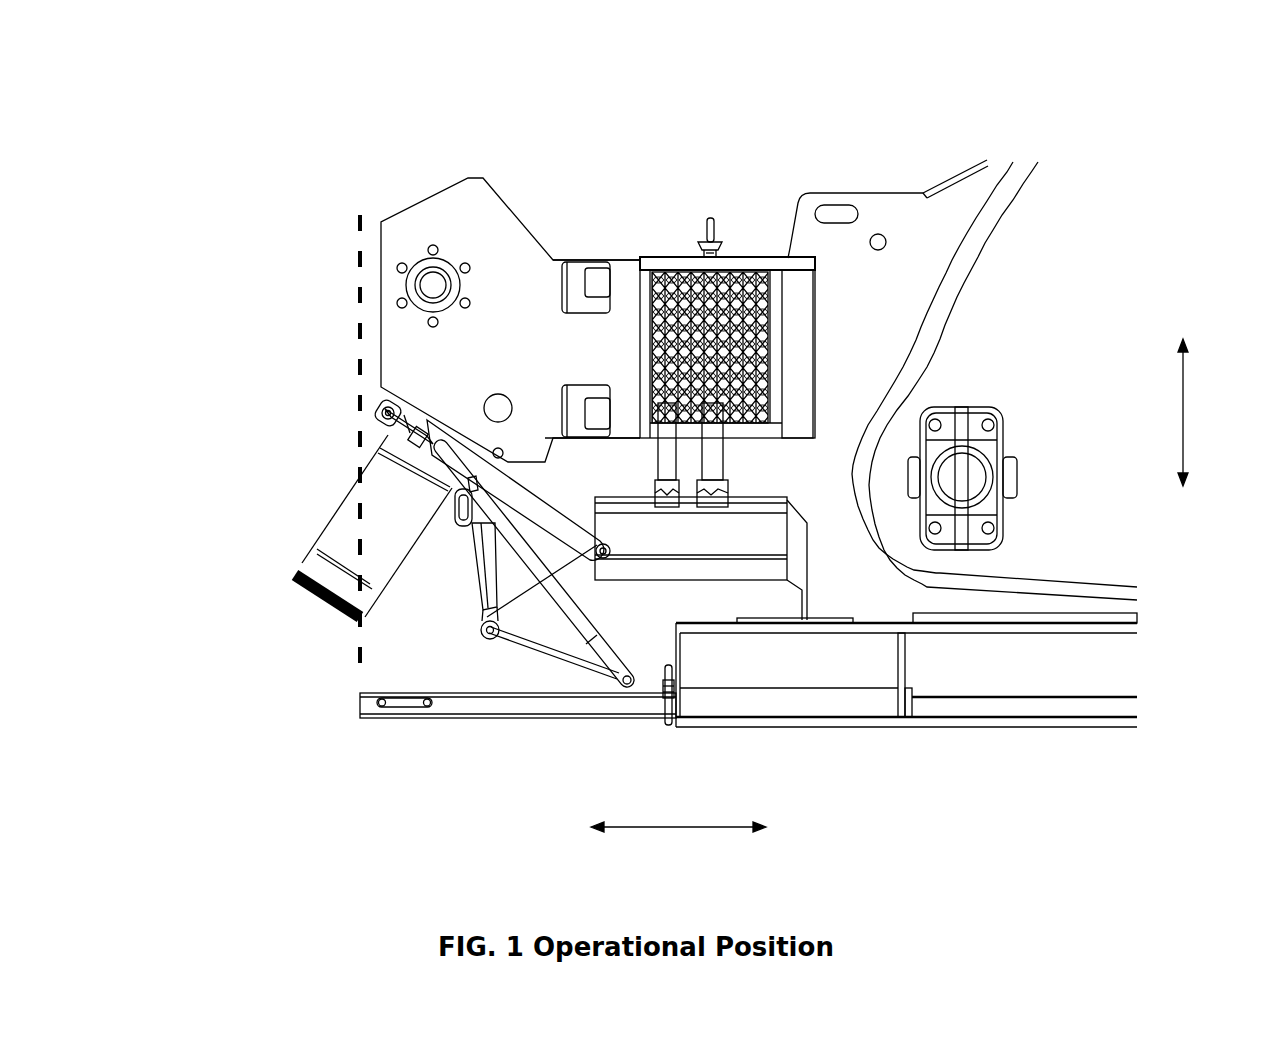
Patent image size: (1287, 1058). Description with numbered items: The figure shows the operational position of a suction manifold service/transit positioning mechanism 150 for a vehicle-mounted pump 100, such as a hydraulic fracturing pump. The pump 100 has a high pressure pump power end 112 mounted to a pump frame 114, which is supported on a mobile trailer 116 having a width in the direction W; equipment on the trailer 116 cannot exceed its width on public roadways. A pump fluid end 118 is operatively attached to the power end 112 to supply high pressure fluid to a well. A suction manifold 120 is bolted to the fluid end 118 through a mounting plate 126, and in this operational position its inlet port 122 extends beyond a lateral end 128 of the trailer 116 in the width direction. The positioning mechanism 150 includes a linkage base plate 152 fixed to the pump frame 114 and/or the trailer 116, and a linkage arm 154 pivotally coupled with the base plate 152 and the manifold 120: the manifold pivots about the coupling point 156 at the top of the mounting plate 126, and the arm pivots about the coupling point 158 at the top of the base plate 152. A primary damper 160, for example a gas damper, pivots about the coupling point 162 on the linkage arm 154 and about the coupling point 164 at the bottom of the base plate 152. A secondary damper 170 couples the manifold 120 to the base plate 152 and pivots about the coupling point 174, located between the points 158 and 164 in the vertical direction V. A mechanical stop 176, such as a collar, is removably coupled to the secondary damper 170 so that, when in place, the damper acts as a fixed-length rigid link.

The vehicle-mounted pump 100 is at (1108, 76).
The high pressure pump power end 112 is at (900, 192).
The pump frame 114 is at (907, 662).
The mobile trailer 116 is at (360, 703).
The pump fluid end 118 is at (417, 203).
The suction manifold 120 is at (330, 518).
The inlet port 122 is at (302, 563).
The mounting plate 126 is at (428, 418).
The lateral end 128 is at (357, 280).
The suction manifold service/transit positioning mechanism 150 is at (433, 602).
The linkage base plate 152 is at (668, 690).
The linkage arm 154 is at (505, 473).
The coupling point 156 is at (385, 405).
The coupling point 158 is at (652, 578).
The primary damper 160 is at (580, 634).
The coupling point 162 is at (390, 425).
The coupling point 164 is at (633, 644).
The secondary damper 170 is at (480, 604).
The coupling point 174 is at (488, 640).
The mechanical stop 176 is at (448, 492).